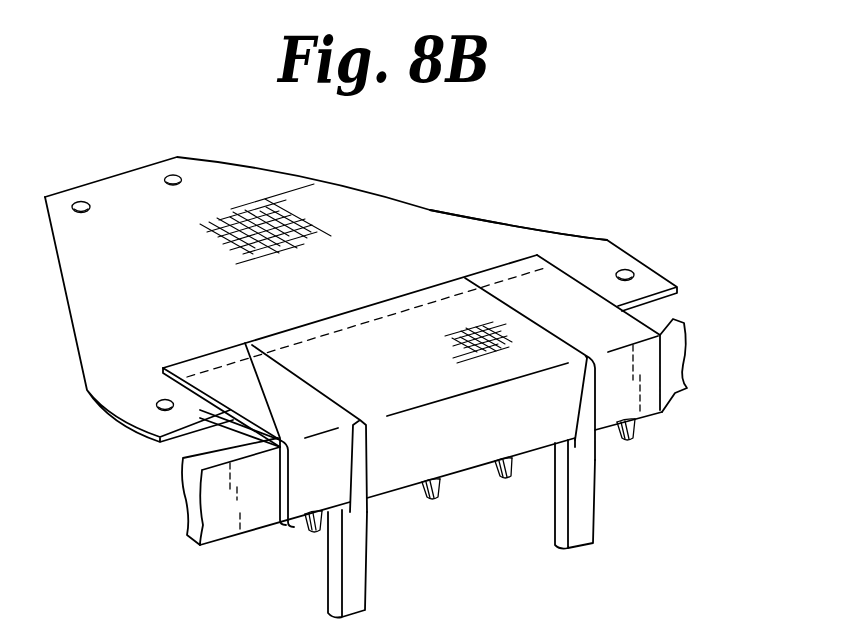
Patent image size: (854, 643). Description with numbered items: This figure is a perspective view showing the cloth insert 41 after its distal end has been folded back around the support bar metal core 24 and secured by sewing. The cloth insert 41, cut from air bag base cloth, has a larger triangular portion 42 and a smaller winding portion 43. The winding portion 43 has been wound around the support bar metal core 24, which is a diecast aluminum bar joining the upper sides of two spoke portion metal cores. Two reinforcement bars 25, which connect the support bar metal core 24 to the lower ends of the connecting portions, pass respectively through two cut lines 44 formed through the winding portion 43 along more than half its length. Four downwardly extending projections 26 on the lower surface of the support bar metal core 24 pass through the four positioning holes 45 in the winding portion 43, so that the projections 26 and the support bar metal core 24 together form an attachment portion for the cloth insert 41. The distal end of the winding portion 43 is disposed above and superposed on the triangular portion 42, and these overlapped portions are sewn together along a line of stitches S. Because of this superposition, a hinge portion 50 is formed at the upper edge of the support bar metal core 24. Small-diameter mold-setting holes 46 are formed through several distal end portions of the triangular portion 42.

The support bar metal core 24 is at (673, 388).
The reinforcement bars 25 is at (368, 598).
The projections 26 is at (317, 533).
The cloth insert 41 is at (308, 168).
The triangular portion 42 is at (470, 214).
The winding portion 43 is at (257, 418).
The cut lines 44 is at (246, 343).
The positioning holes 45 is at (307, 530).
The mold-setting holes 46 is at (165, 181).
The hinge portion 50 is at (633, 317).
The line of stitches S is at (214, 367).